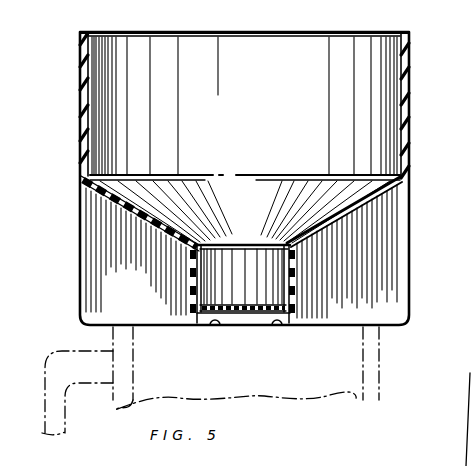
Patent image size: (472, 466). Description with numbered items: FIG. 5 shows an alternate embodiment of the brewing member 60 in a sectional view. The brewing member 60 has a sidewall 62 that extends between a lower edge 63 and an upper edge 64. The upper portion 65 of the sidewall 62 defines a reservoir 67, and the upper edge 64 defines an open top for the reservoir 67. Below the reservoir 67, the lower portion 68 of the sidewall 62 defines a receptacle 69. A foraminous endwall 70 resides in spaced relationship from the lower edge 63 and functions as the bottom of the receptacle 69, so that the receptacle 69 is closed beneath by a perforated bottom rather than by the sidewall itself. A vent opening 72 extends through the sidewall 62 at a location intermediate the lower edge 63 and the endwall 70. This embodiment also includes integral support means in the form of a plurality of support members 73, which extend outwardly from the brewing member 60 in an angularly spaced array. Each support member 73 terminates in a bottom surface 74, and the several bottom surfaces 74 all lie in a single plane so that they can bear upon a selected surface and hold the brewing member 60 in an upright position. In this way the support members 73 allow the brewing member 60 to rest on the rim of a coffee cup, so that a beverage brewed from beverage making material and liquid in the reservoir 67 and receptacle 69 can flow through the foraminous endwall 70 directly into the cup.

The brewing member 60 is at (71, 76).
The sidewall 62 is at (82, 150).
The lower edge 63 is at (294, 328).
The upper edge 64 is at (81, 31).
The upper portion 65 is at (407, 103).
The reservoir 67 is at (268, 134).
The lower portion 68 is at (296, 296).
The receptacle 69 is at (258, 295).
The foraminous endwall 70 is at (251, 318).
The vent opening 72 is at (213, 333).
The support member 73 is at (407, 283).
The bottom surface 74 is at (350, 328).